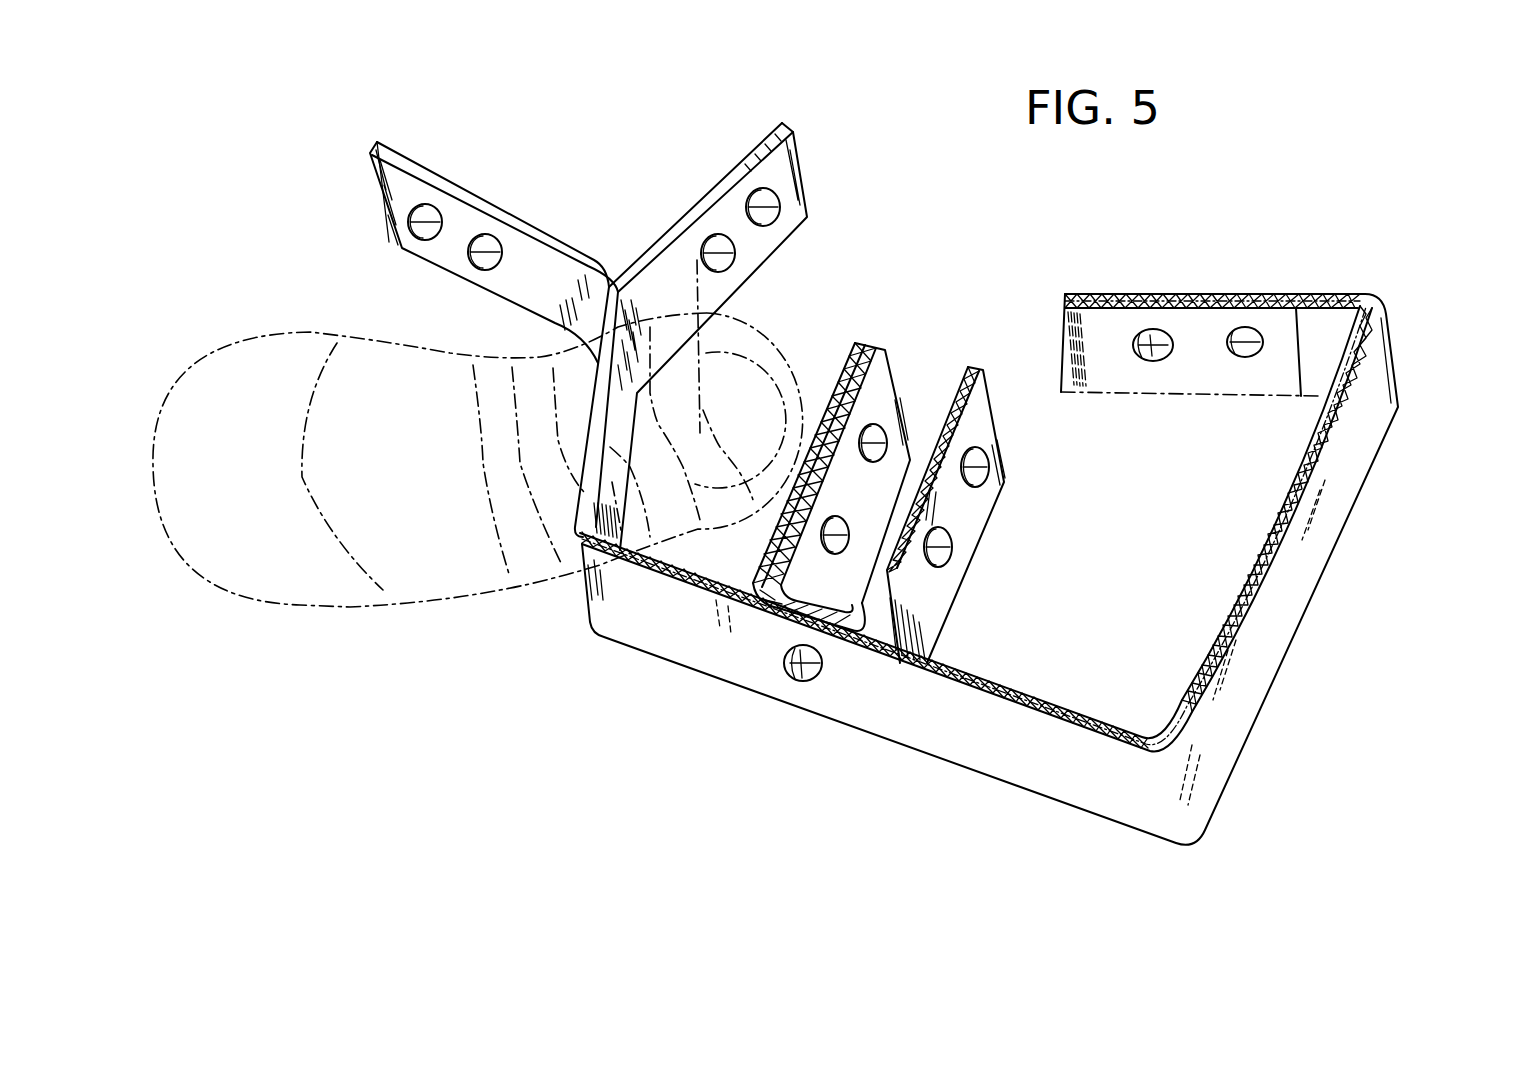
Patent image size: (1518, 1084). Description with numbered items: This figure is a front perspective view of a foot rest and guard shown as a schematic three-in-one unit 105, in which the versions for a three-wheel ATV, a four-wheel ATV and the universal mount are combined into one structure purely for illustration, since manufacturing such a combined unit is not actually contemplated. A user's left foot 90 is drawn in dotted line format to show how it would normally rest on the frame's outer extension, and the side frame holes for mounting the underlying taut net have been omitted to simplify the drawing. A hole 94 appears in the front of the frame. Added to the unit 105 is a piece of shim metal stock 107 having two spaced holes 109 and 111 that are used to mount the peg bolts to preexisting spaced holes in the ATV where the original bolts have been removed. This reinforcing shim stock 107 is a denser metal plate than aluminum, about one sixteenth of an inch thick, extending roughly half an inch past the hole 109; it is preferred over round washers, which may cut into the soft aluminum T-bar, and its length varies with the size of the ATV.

The user's left foot 90 is at (281, 471).
The mounting hole 94 is at (800, 669).
The three-in-one unit 105 is at (1337, 655).
The shim metal stock 107 is at (1207, 328).
The hole 109 is at (1153, 340).
The hole 111 is at (1248, 333).